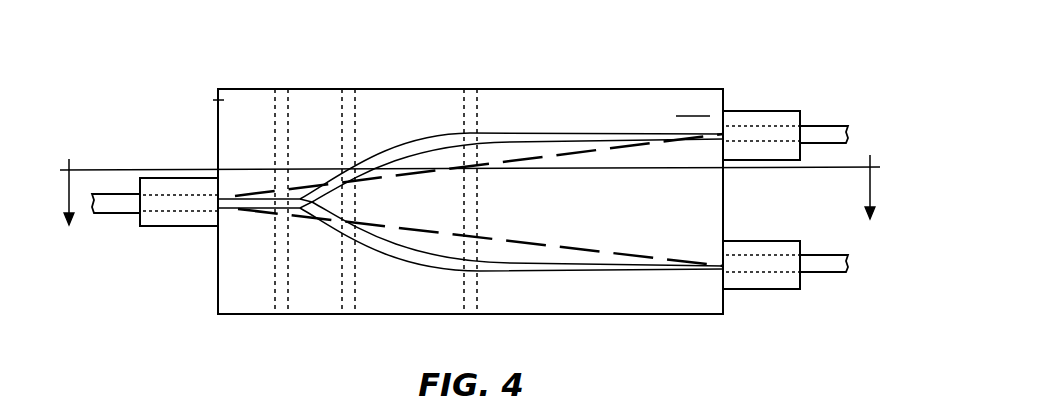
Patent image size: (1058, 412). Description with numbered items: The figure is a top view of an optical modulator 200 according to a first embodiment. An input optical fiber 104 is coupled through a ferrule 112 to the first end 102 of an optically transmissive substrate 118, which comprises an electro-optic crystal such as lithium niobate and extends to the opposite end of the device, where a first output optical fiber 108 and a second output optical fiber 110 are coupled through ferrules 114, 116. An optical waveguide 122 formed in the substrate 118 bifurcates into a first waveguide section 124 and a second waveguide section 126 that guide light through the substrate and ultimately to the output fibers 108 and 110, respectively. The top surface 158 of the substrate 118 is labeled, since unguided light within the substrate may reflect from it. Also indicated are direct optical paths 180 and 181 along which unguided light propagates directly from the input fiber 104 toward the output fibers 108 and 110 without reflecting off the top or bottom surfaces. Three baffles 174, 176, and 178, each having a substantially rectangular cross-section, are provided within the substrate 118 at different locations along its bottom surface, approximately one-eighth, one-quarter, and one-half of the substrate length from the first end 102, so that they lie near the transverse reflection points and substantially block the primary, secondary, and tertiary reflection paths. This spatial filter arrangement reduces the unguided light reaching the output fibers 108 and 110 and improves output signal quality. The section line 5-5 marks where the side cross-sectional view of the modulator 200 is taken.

The section line 5- 5 is at (470, 204).
The first end 102 is at (218, 302).
The input optical fiber 104 is at (115, 212).
The first output optical fiber 108 is at (825, 123).
The second output optical fiber 110 is at (825, 273).
The ferrule 112 is at (172, 225).
The ferrule 114 is at (758, 110).
The ferrule 116 is at (757, 288).
The optically transmissive substrate 118 is at (218, 99).
The optical waveguide 122 is at (233, 195).
The first waveguide section 124 is at (500, 130).
The second waveguide section 126 is at (576, 268).
The top surface 158 is at (692, 104).
The baffle 174 is at (283, 315).
The baffle 176 is at (348, 315).
The baffle 178 is at (472, 313).
The direct optical path 180 is at (572, 151).
The direct optical path 181 is at (576, 243).
The optical modulator 200 is at (582, 57).